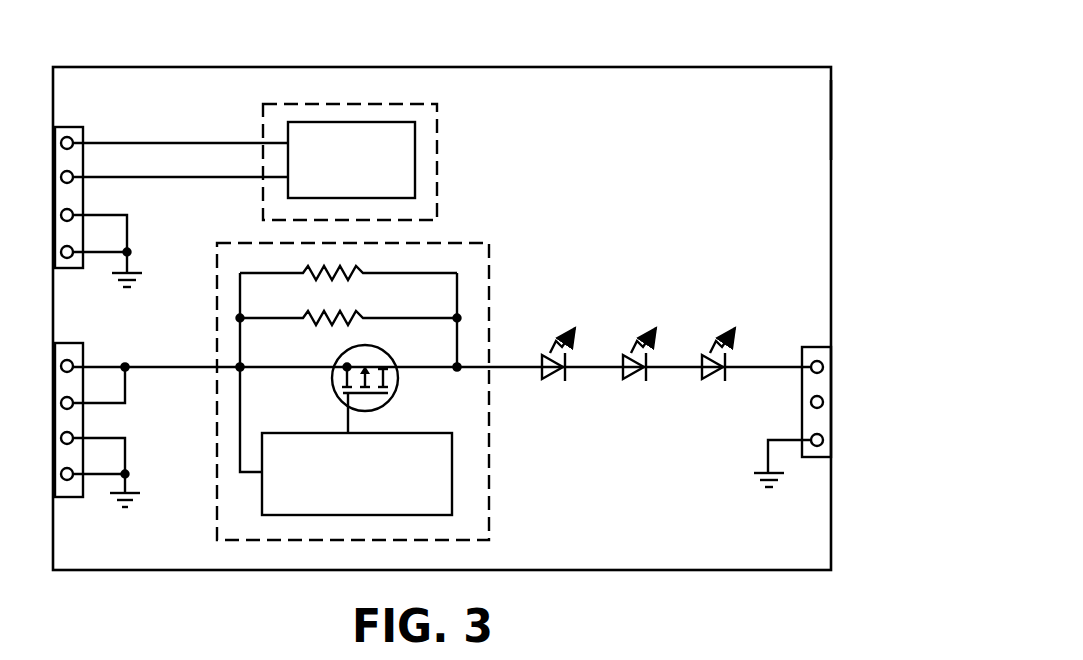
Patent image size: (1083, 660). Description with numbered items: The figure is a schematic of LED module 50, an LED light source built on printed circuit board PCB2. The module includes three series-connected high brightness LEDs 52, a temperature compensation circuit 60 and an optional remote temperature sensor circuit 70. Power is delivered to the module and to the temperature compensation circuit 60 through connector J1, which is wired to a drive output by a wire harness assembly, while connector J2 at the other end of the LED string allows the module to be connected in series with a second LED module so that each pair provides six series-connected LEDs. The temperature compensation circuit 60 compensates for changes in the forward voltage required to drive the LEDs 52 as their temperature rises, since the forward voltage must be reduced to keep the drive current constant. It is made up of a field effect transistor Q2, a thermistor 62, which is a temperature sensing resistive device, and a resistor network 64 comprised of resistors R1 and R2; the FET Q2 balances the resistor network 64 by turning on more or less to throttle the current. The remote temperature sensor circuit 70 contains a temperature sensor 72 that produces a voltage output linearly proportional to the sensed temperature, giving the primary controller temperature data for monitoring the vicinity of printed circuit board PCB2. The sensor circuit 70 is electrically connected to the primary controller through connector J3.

The LED module 50 is at (724, 63).
The LEDs 52 is at (547, 378).
The temperature compensation circuit 60 is at (479, 243).
The thermistor 62 is at (453, 468).
The resistor network 64 is at (401, 358).
The remote temperature sensor circuit 70 is at (438, 142).
The temperature sensor 72 is at (416, 177).
The connector J1 is at (73, 497).
The connector J2 is at (813, 345).
The connector J3 is at (79, 125).
The resistor R1 is at (348, 263).
The resistor R2 is at (348, 303).
The field effect transistor Q2 is at (386, 389).
The printed circuit board PCB2 is at (832, 145).